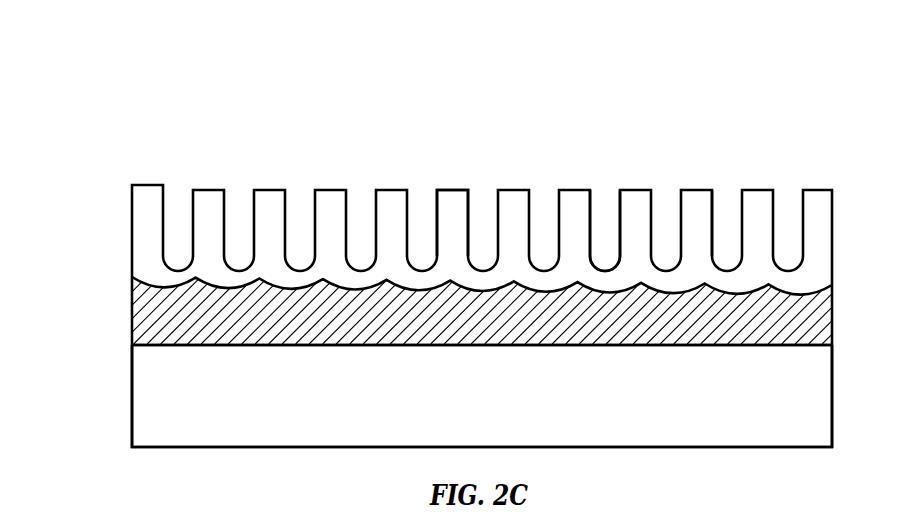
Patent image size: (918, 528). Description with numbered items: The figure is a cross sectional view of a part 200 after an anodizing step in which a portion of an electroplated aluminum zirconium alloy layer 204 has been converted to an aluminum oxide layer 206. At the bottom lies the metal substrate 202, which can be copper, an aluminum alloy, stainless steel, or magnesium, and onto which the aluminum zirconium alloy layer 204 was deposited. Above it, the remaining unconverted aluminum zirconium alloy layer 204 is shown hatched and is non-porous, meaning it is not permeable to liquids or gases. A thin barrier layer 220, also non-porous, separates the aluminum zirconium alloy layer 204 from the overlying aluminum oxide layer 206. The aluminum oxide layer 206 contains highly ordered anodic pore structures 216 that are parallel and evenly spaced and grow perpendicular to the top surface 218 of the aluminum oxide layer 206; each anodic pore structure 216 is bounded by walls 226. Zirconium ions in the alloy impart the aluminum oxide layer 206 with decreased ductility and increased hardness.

The part 200 is at (388, 87).
The metal substrate 202 is at (132, 412).
The aluminum zirconium alloy layer 204 is at (132, 318).
The aluminum oxide layer 206 is at (132, 214).
The anodic pore structures 216 is at (608, 226).
The top surface 218 is at (452, 190).
The barrier layer 220 is at (132, 277).
The walls 226 is at (713, 230).